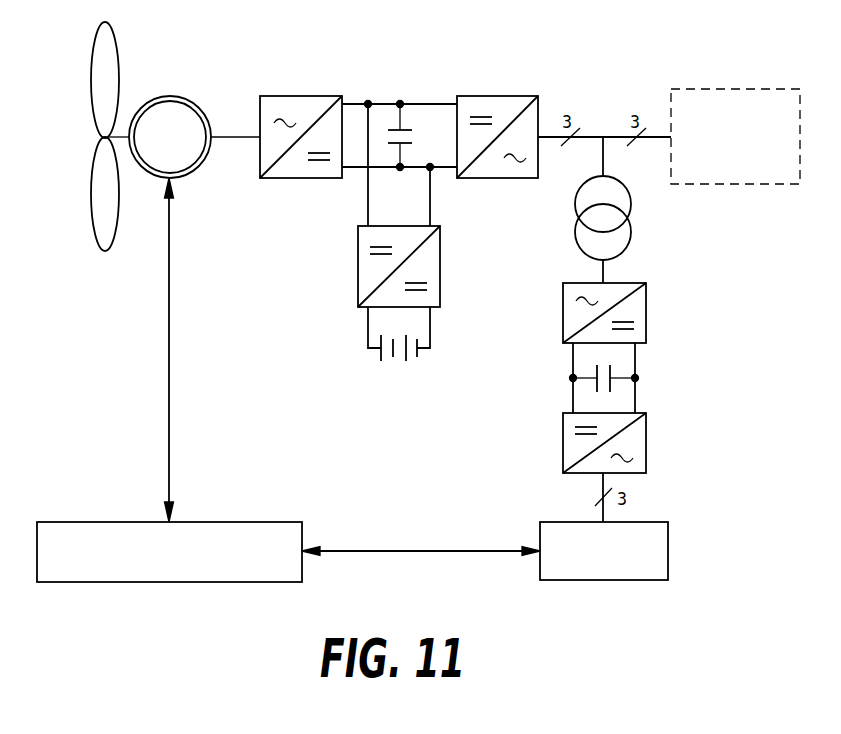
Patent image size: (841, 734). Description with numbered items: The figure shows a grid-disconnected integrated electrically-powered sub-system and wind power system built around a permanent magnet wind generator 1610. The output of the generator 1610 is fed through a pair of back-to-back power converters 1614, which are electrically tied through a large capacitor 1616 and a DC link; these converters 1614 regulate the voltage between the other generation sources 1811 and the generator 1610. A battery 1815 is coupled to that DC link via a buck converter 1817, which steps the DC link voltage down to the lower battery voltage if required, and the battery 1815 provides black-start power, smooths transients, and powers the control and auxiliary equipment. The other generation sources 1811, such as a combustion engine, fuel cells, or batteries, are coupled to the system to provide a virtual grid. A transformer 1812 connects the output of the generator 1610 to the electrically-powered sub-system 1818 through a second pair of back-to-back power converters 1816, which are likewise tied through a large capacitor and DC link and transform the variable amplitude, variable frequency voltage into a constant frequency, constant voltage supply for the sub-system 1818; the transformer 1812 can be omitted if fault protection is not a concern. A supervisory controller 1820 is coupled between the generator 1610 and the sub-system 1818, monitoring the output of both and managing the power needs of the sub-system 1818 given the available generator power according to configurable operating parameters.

The PM wind generator 1610 is at (169, 95).
The back-to-back power converters 1614 is at (304, 96).
The capacitor 1616 is at (403, 128).
The buck converter 1817 is at (441, 267).
The battery 1815 is at (418, 352).
The other generation sources 1811 is at (744, 87).
The transformer 1812 is at (631, 233).
The back-to-back power converters 1816 is at (647, 314).
The electrically-powered sub-system 1818 is at (669, 552).
The supervisory controller 1820 is at (224, 521).